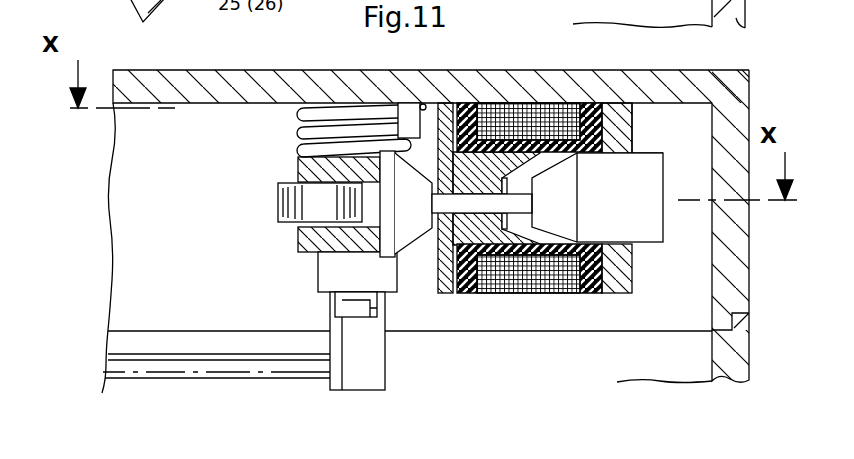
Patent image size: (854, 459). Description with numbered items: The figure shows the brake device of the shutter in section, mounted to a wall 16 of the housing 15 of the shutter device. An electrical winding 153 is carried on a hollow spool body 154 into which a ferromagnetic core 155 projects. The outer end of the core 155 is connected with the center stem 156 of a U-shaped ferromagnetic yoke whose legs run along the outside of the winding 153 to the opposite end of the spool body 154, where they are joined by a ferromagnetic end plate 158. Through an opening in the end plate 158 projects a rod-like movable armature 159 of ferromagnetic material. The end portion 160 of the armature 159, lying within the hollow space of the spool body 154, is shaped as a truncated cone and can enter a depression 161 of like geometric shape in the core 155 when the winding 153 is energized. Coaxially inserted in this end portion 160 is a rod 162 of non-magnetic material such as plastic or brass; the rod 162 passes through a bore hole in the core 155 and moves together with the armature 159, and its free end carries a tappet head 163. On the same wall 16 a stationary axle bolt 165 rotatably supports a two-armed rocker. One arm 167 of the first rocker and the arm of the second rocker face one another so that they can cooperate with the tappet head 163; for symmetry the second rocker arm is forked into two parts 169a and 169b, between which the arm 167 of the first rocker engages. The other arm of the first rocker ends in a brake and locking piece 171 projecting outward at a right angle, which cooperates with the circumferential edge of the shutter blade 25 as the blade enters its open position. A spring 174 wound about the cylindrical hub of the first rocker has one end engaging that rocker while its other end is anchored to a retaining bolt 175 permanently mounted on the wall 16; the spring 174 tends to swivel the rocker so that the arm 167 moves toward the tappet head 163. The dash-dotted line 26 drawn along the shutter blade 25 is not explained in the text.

The housing 15 is at (740, 260).
The wall 16 is at (268, 78).
The shutter blade 25 is at (208, 355).
The axis of guide plate 26 is at (203, 377).
The electrical winding 153 is at (492, 114).
The hollow spool body 154 is at (545, 252).
The ferromagnetic core 155 is at (502, 170).
The center stem 156 is at (447, 280).
The ferromagnetic end plate 158 is at (630, 275).
The movable armature 159 is at (648, 153).
The end portion of armature 160 is at (565, 176).
The depression 161 is at (523, 231).
The rod 162 is at (480, 208).
The tappet head 163 is at (410, 230).
The stationary axle bolt 165 is at (350, 308).
The arm of first rocker 167 is at (283, 203).
The forked part of arm 169a is at (298, 167).
The forked part of arm 169b is at (298, 241).
The brake and locking piece 171 is at (375, 358).
The spring 174 is at (358, 112).
The retaining bolt 175 is at (412, 118).